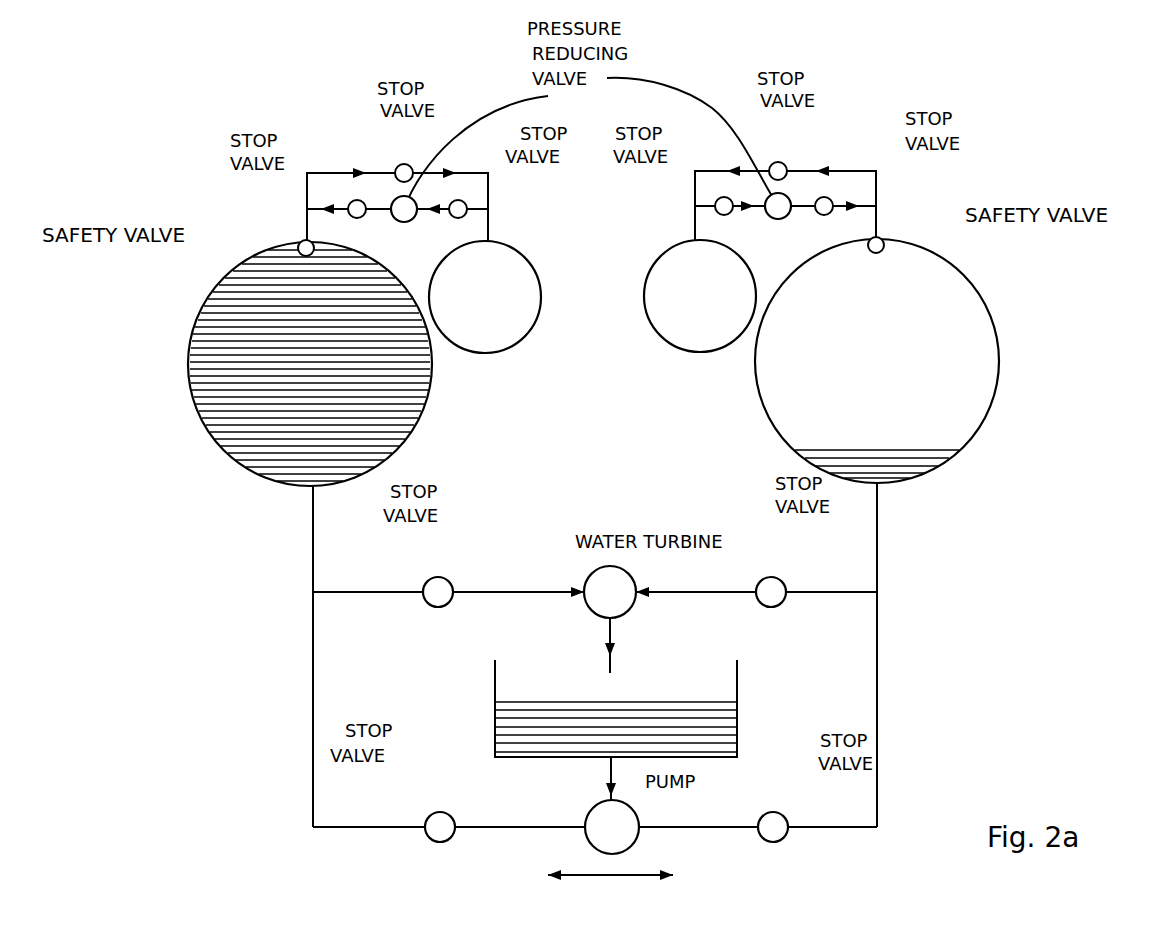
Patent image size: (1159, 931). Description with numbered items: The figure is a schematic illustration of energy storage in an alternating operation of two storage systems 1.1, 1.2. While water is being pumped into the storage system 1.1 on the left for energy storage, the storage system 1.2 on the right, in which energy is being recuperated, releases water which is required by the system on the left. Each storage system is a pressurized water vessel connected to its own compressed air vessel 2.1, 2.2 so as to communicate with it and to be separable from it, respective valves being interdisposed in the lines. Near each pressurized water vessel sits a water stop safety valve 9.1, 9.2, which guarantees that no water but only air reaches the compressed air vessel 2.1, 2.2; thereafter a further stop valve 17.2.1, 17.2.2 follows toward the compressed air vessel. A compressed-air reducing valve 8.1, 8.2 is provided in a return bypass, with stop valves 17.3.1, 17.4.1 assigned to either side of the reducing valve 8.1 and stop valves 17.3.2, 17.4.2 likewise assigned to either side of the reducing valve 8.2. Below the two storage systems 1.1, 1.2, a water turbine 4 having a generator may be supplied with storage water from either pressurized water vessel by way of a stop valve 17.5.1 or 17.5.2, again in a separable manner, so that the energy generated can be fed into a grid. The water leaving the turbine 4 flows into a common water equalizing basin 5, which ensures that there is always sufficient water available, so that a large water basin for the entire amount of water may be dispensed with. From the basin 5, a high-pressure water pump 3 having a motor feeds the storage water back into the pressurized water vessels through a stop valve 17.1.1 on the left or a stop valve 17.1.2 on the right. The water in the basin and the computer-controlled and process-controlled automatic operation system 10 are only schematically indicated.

The storage system 1.1 is at (417, 412).
The storage system 1.2 is at (985, 400).
The compressed air vessel 2.1 is at (502, 336).
The compressed air vessel 2.2 is at (668, 338).
The high-pressure water pump 3 is at (627, 820).
The water turbine 4 is at (605, 602).
The water equalizing basin 5 is at (736, 700).
The compressed-air reducing valve 8.1 is at (404, 209).
The compressed-air reducing valve 8.2 is at (778, 206).
The water stop safety valve 9.1 is at (300, 246).
The water stop safety valve 9.2 is at (878, 244).
The automatic operation system 10 is at (512, 722).
The stop valve 17.1.1 is at (437, 820).
The stop valve 17.1.2 is at (773, 827).
The stop valve 17.2.1 is at (404, 163).
The stop valve 17.2.2 is at (778, 162).
The stop valve 17.3.1 is at (352, 207).
The stop valve 17.3.2 is at (722, 206).
The stop valve 17.4.1 is at (462, 207).
The stop valve 17.4.2 is at (826, 206).
The stop valve 17.5.1 is at (438, 592).
The stop valve 17.5.2 is at (775, 588).